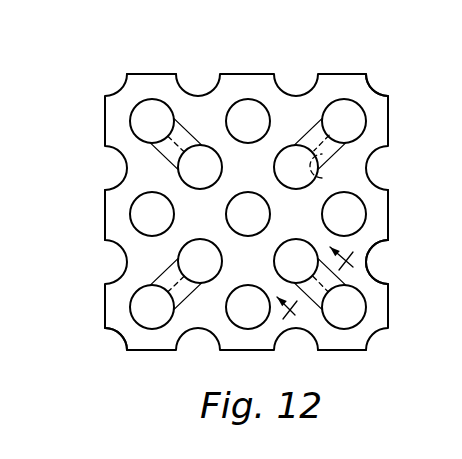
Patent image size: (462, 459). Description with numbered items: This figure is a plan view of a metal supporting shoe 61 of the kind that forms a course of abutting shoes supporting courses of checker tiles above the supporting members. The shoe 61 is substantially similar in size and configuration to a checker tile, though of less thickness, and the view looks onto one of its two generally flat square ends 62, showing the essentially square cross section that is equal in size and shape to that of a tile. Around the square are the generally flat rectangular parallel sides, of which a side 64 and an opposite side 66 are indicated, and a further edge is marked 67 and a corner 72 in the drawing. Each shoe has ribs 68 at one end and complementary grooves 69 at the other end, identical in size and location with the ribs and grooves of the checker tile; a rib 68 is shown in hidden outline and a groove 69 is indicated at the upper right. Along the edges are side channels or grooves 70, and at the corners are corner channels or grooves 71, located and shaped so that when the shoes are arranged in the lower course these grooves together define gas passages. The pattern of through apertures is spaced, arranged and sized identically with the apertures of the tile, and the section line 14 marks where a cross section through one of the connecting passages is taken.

The metal supporting shoe 61 is at (100, 130).
The square end 62 is at (162, 74).
The rectangular side 64 is at (105, 212).
The rectangular side 66 is at (388, 212).
The bottom edge 67 is at (337, 352).
The rib 68 is at (322, 178).
The groove 69 is at (342, 146).
The side channel 70 is at (380, 260).
The corner channel 71 is at (115, 333).
The top-right corner notch 72 is at (376, 86).
The aperture 14 is at (322, 289).